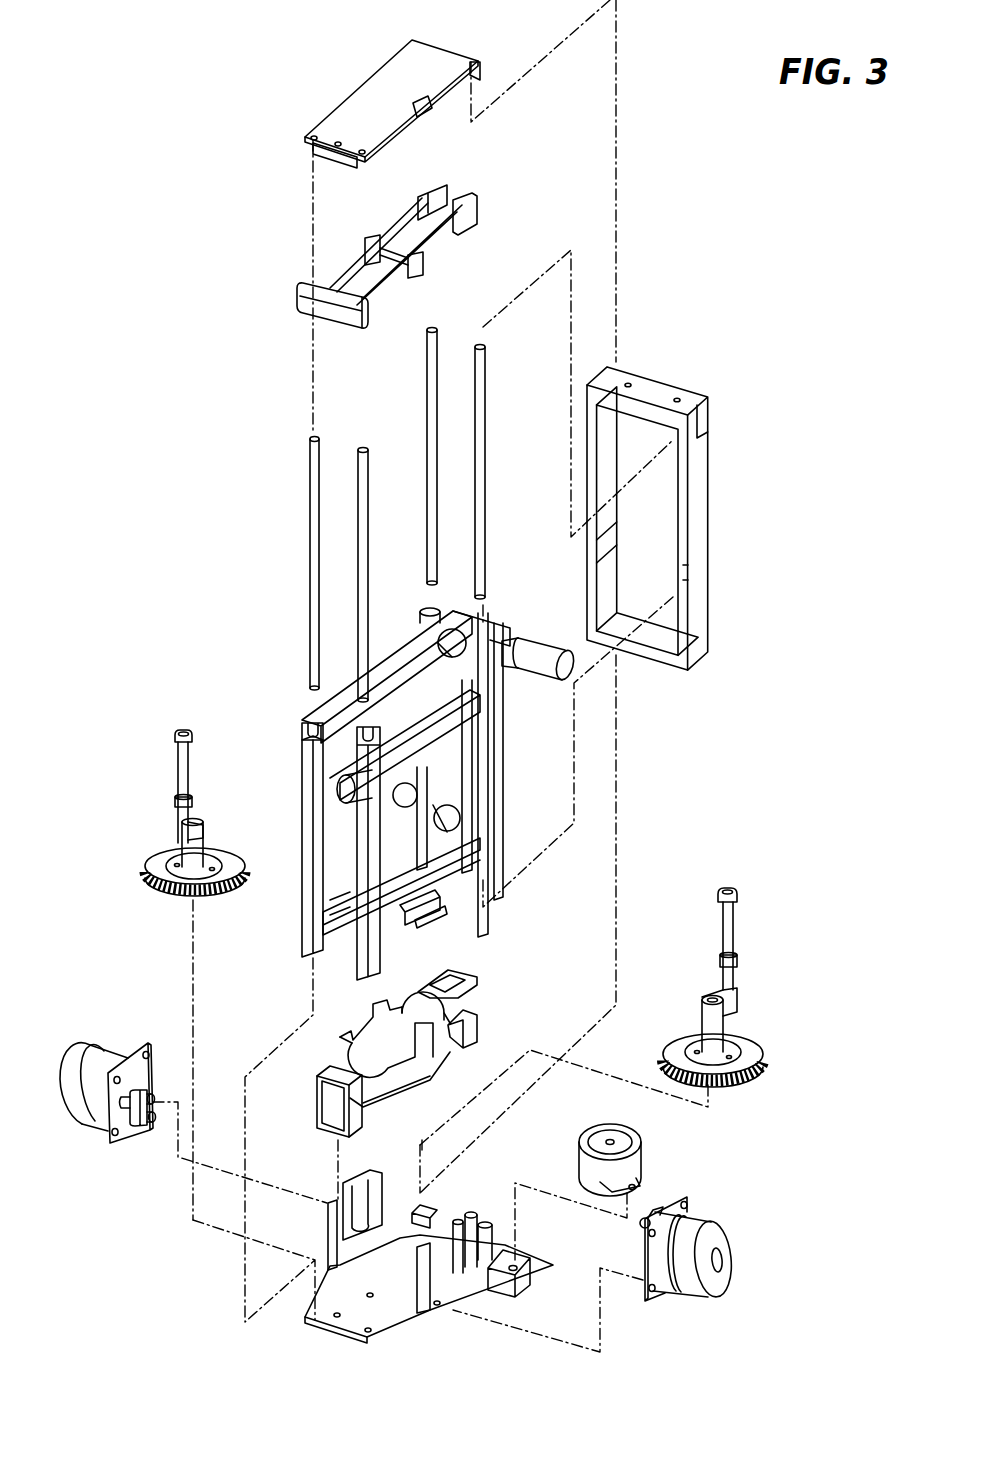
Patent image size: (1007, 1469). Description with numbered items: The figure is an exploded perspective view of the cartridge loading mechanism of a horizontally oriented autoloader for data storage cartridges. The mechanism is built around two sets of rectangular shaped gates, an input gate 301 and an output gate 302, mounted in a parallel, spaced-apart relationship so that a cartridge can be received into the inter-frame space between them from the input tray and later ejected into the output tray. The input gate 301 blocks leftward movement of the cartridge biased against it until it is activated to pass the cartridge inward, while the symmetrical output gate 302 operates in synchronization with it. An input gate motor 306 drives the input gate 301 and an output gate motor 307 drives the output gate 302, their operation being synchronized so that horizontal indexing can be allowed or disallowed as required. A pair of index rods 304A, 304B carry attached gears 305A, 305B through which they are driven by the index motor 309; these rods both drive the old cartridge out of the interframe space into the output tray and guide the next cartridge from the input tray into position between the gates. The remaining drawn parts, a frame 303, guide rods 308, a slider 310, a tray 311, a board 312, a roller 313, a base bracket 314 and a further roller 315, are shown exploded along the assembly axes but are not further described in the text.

The input gate 301 is at (382, 968).
The output gate 302 is at (303, 745).
The frame 303 is at (707, 473).
The index rod 304A is at (178, 762).
The index rod 304B is at (730, 920).
The gear 305A is at (157, 866).
The gear 305B is at (753, 1038).
The input gate motor 306 is at (718, 1280).
The output gate motor 307 is at (143, 1130).
The guide rod 308 is at (310, 457).
The index motor 309 is at (640, 1165).
The slider 310 is at (318, 1106).
The tray 311 is at (303, 304).
The circuit board 312 is at (353, 108).
The roller 313 is at (547, 653).
The base bracket 314 is at (530, 1283).
The roller 315 is at (338, 794).